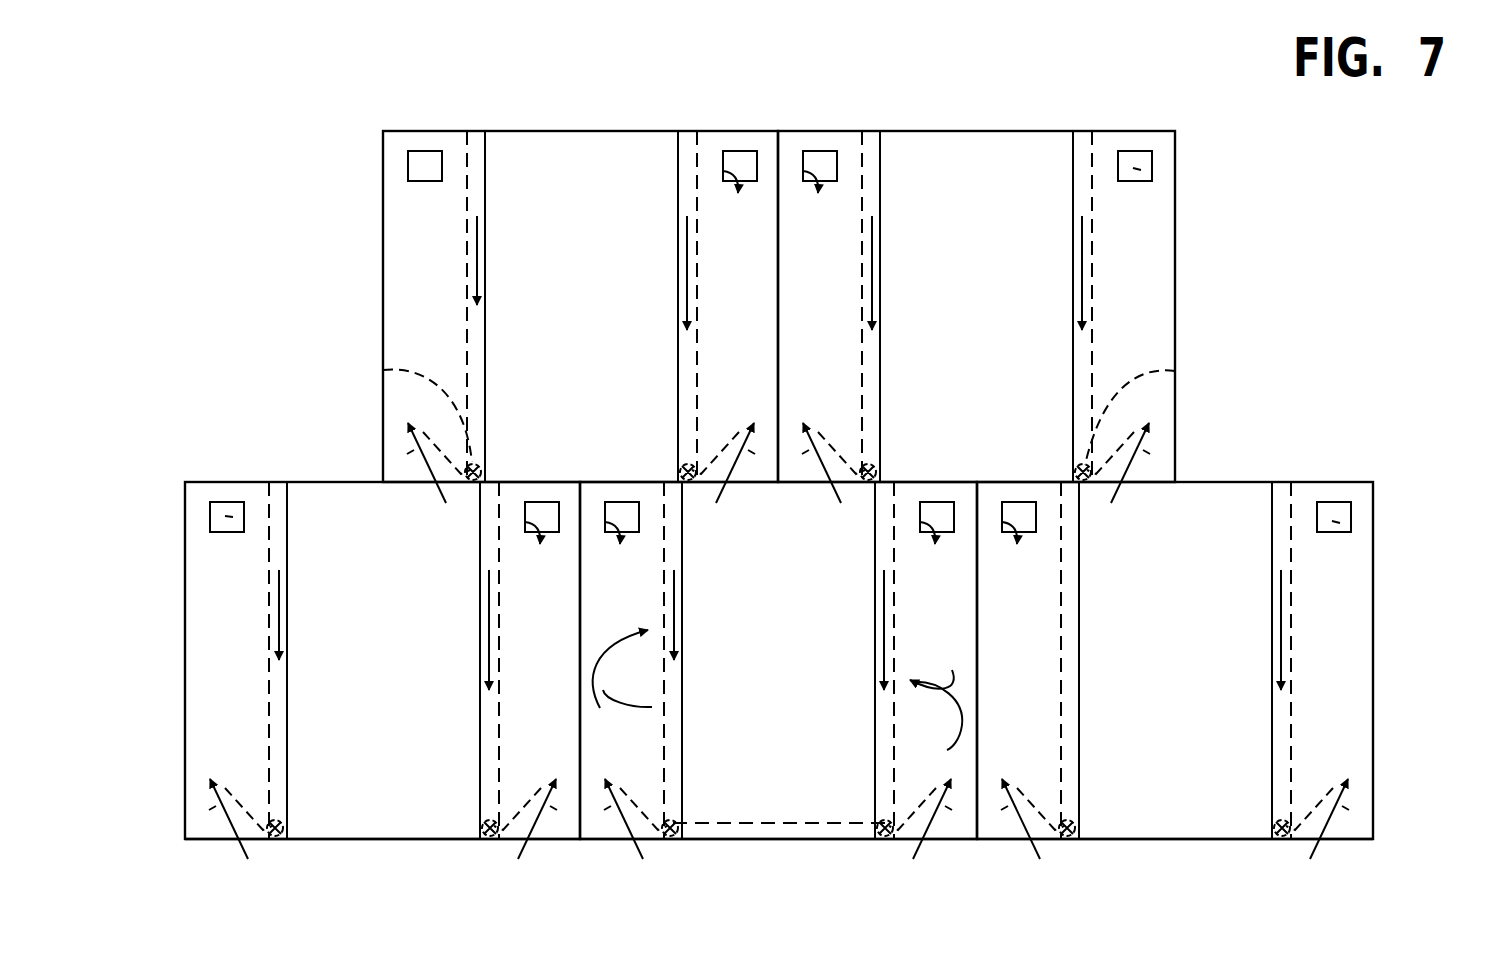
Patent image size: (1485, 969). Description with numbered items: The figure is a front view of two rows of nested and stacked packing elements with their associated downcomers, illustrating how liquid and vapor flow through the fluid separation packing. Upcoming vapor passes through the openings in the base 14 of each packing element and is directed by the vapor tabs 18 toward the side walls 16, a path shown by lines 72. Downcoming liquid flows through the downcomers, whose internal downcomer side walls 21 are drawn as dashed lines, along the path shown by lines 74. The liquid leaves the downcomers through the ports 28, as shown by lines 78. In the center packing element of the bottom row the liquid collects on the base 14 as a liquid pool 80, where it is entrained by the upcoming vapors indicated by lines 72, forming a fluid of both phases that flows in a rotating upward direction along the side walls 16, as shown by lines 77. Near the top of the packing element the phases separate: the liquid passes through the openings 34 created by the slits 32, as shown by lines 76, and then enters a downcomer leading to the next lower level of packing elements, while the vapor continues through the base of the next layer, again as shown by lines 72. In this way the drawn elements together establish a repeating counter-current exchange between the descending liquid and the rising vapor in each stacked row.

The base 14 is at (405, 839).
The side walls 16 is at (383, 277).
The vapor tabs 18 is at (1140, 468).
The internal downcomer side walls 21 is at (463, 162).
The ports 28 is at (383, 370).
The slits 32 is at (1128, 152).
The openings 34 is at (1133, 168).
The lines (vapor flow) 72 is at (418, 458).
The lines (liquid flow through downcomers) 74 is at (688, 297).
The lines (liquid flow through openings) 76 is at (740, 178).
The lines (two-phase fluid flow) 77 is at (777, 690).
The lines (liquid exiting ports) 78 is at (1082, 470).
The liquid pool 80 is at (800, 828).